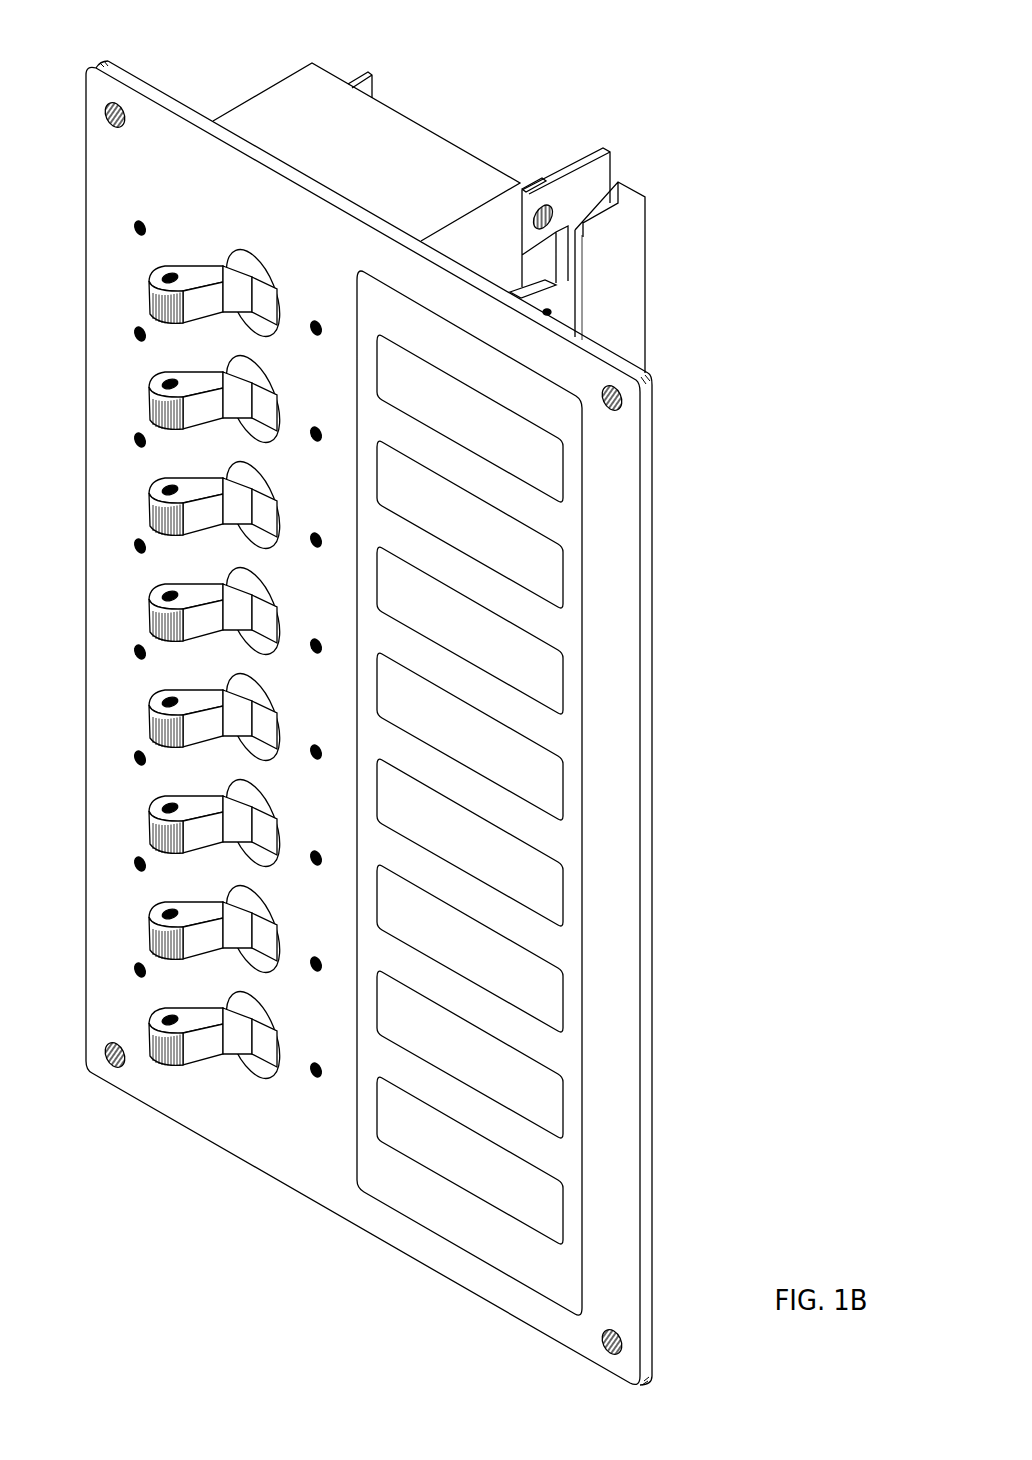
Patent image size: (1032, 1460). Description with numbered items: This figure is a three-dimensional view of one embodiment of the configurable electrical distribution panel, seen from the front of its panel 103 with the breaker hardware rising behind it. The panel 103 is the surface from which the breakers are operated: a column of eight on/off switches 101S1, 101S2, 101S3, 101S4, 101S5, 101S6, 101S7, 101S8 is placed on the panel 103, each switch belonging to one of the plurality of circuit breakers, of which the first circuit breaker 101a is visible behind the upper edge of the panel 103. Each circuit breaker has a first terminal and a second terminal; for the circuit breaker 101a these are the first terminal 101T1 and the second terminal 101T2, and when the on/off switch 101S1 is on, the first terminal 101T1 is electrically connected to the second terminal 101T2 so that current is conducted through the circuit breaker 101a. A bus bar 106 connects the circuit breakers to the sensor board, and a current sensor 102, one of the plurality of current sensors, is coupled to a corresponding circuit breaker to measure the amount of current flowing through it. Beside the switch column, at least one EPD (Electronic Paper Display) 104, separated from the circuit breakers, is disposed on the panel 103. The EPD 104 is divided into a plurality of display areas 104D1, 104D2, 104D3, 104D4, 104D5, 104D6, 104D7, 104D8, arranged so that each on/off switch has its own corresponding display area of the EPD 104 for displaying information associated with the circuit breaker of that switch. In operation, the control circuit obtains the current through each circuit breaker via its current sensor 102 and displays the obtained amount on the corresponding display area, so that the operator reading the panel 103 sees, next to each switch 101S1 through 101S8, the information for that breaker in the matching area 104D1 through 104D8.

The circuit breaker 101a is at (463, 148).
The first terminal 101T1 is at (542, 173).
The second terminal 101T2 is at (373, 75).
The bus bar 106 is at (615, 162).
The current sensor 102 is at (647, 282).
The panel 103 is at (645, 582).
The EPD (Electronic Paper Display) 104 is at (585, 525).
The on/off switch 101S1 is at (220, 292).
The on/off switch 101S2 is at (220, 398).
The on/off switch 101S3 is at (220, 504).
The on/off switch 101S4 is at (220, 610).
The on/off switch 101S5 is at (220, 716).
The on/off switch 101S6 is at (220, 822).
The on/off switch 101S7 is at (220, 928).
The on/off switch 101S8 is at (220, 1034).
The display area 104D1 is at (470, 418).
The display area 104D2 is at (470, 524).
The display area 104D3 is at (470, 630).
The display area 104D4 is at (470, 736).
The display area 104D5 is at (470, 842).
The display area 104D6 is at (470, 948).
The display area 104D7 is at (470, 1054).
The display area 104D8 is at (470, 1160).